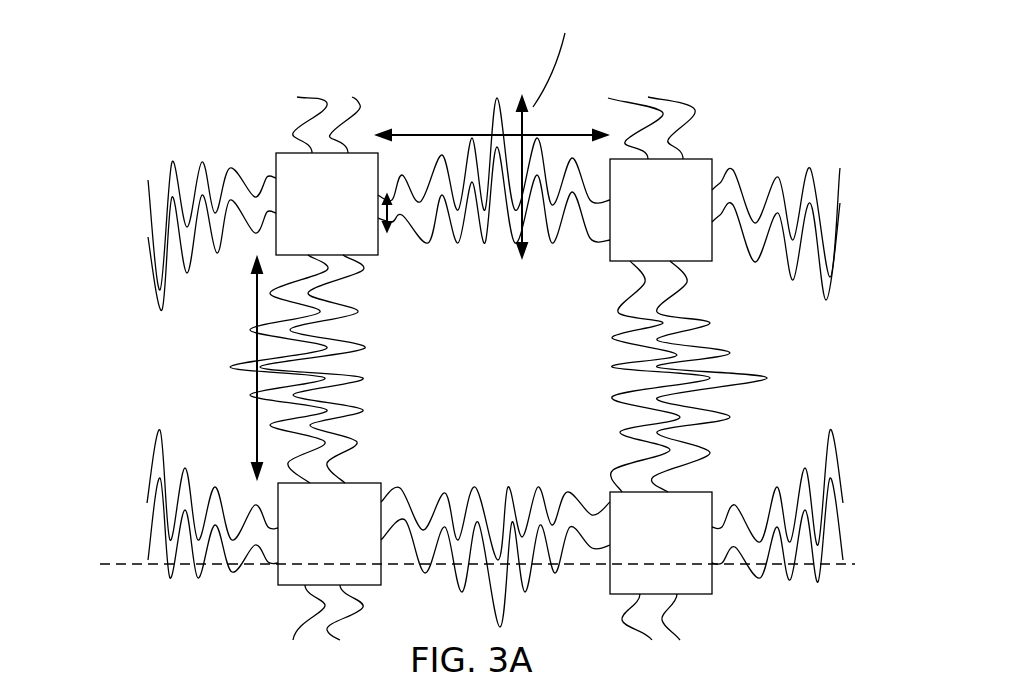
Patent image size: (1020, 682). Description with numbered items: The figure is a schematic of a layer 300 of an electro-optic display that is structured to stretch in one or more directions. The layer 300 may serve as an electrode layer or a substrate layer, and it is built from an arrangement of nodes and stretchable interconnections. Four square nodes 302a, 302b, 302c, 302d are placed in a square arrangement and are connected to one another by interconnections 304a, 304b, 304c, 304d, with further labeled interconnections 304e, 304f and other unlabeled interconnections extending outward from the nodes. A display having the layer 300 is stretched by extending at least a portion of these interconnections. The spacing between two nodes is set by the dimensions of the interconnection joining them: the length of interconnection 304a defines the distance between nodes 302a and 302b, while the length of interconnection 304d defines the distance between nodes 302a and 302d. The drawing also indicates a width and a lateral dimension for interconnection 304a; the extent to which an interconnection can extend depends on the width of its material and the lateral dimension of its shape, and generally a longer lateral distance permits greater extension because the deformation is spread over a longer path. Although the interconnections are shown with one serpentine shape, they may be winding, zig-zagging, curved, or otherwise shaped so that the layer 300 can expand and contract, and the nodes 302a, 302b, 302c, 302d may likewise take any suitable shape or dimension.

The layer 300 is at (124, 156).
The node 302a is at (285, 175).
The node 302b is at (697, 168).
The node 302c is at (700, 502).
The node 302d is at (297, 580).
The interconnection 304a is at (455, 247).
The interconnection 304b is at (620, 377).
The interconnection 304c is at (510, 482).
The interconnection 304d is at (408, 428).
The interconnection 304e is at (813, 448).
The interconnection 304f is at (150, 443).